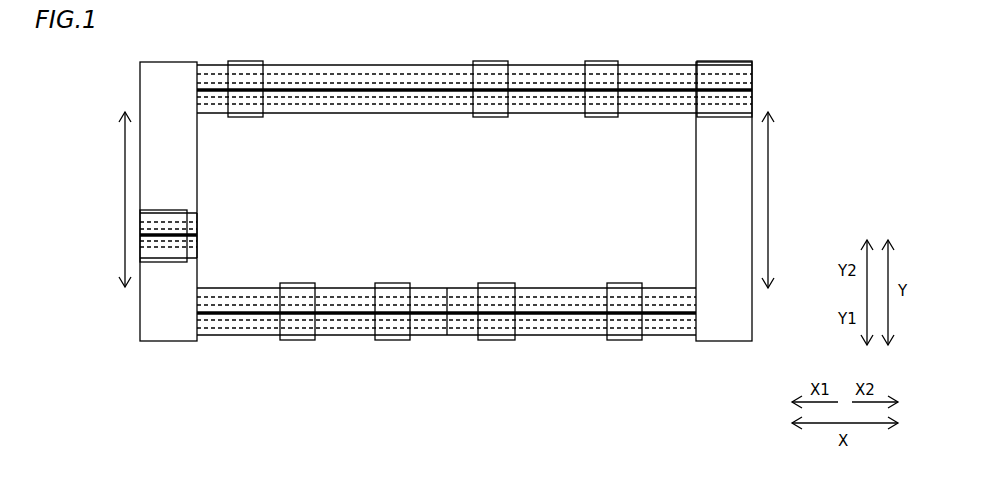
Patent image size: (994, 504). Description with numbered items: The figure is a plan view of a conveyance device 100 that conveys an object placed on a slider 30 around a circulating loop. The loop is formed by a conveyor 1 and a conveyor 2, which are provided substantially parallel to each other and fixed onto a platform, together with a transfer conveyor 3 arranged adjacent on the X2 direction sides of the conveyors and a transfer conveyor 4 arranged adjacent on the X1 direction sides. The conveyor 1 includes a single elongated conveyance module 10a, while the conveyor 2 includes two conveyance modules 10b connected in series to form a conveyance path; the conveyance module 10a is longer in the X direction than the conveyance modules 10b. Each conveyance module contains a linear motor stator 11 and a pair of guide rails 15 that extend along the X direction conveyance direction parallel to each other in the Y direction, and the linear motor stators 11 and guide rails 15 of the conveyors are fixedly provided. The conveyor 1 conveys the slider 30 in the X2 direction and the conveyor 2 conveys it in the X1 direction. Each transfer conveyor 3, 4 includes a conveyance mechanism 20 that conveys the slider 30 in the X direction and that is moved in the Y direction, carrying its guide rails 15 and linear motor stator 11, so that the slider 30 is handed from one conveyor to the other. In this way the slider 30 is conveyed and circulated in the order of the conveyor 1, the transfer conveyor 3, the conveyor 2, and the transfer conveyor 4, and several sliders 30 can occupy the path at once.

The conveyor 1 is at (540, 32).
The conveyance device 100 is at (764, 33).
The conveyor 2 is at (570, 260).
The transfer conveyor 3 is at (786, 161).
The transfer conveyor 4 is at (119, 90).
The conveyance module 10a is at (383, 65).
The conveyance module 10b is at (328, 288).
The linear motor stator 11 is at (380, 93).
The guide rail 15 is at (335, 74).
The conveyance mechanism 20 is at (697, 118).
The slider 30 is at (245, 61).